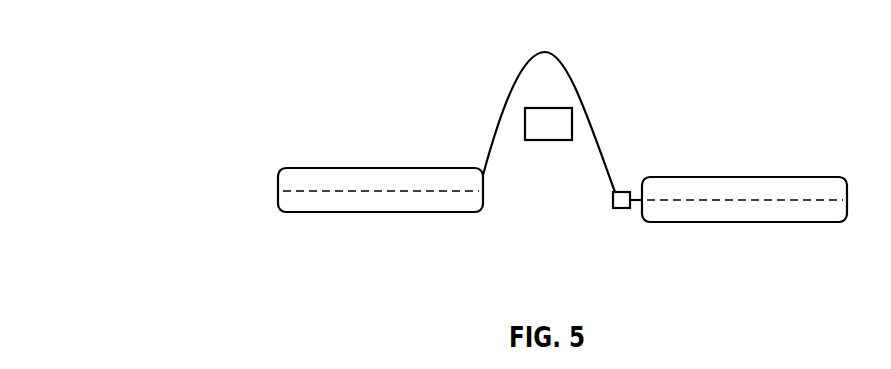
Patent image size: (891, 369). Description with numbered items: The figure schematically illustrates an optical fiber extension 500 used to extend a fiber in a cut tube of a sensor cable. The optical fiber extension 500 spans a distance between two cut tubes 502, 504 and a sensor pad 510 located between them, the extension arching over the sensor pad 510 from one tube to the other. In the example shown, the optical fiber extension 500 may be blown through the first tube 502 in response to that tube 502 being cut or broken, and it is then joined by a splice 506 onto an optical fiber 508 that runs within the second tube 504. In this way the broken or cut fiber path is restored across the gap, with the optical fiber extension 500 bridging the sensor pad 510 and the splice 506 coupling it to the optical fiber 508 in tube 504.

The optical fiber extension 500 is at (289, 58).
The cut tube 502 is at (422, 215).
The cut tube 504 is at (785, 223).
The splice 506 is at (620, 210).
The optical fiber 508 is at (797, 200).
The sensor pad 510 is at (550, 140).